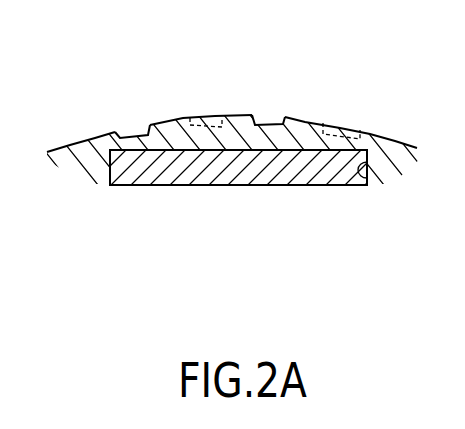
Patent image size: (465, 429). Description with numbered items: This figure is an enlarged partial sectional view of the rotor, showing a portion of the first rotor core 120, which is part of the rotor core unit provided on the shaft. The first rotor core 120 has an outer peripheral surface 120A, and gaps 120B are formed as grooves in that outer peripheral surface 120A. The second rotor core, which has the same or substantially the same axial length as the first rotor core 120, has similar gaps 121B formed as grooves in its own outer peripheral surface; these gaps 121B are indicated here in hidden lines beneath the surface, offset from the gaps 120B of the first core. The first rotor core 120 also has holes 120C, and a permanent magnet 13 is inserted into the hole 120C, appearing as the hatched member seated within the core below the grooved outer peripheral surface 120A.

The first rotor core 120 is at (83, 142).
The outer peripheral surface 120A is at (228, 115).
The gaps 120B is at (133, 134).
The gaps 121B is at (199, 117).
The permanent magnets 13 is at (253, 186).
The holes 120C is at (370, 183).